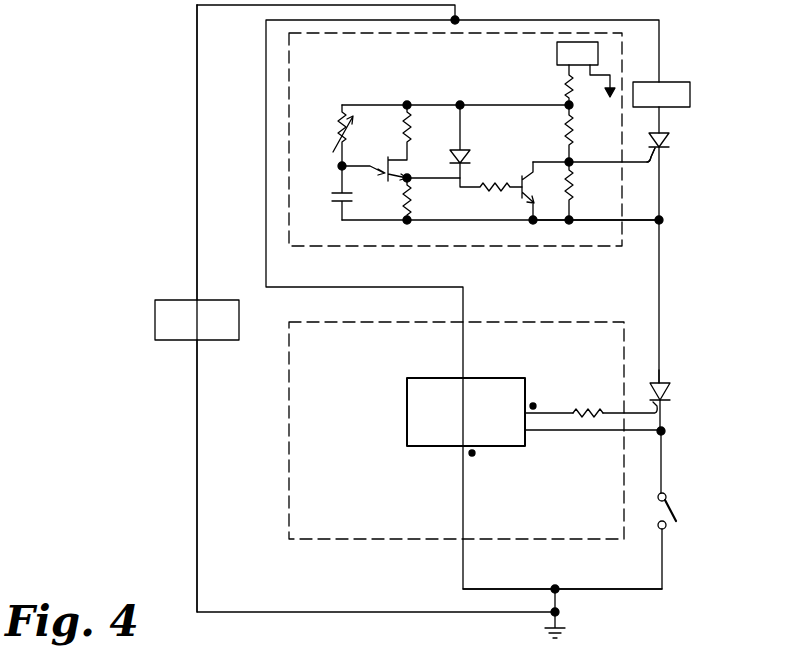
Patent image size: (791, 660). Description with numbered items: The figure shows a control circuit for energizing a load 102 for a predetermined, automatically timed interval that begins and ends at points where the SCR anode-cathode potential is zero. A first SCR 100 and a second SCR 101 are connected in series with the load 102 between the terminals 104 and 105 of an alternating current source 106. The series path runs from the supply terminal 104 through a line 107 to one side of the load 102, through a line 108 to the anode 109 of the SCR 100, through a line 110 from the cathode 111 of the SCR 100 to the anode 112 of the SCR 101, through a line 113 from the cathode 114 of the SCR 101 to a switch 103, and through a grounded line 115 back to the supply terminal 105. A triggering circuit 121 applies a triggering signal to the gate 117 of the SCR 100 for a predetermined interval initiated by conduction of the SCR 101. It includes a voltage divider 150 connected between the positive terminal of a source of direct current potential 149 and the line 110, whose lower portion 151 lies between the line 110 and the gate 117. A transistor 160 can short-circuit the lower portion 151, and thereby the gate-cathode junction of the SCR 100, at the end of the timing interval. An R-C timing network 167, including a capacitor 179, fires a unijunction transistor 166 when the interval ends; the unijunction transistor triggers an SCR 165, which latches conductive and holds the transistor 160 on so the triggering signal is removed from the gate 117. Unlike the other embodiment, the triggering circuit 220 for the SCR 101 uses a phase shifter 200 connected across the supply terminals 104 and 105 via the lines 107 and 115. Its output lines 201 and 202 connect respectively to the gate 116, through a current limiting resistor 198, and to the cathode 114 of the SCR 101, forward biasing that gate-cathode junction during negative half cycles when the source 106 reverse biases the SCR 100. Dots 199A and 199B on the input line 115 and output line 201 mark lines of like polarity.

The first SCR 100 is at (686, 154).
The second SCR 101 is at (698, 399).
The load 102 is at (691, 93).
The switch 103 is at (684, 510).
The supply terminal 104 is at (203, 297).
The supply terminal 105 is at (190, 346).
The alternating current source 106 is at (155, 329).
The line 107 is at (563, 17).
The line 108 is at (666, 112).
The anode 109 is at (653, 133).
The line 110 is at (665, 194).
The cathode 111 is at (668, 150).
The anode 112 is at (670, 392).
The line 113 is at (668, 453).
The cathode 114 is at (668, 403).
The grounded line 115 is at (577, 592).
The gate 116 is at (666, 430).
The gate 117 is at (658, 172).
The triggering circuit 121 is at (284, 120).
The source of direct current potential 149 is at (556, 55).
The voltage divider 150 is at (573, 240).
The lower divider portion 151 is at (583, 201).
The transistor 160 is at (513, 205).
The SCR 165 is at (475, 150).
The unijunction transistor 166 is at (386, 150).
The R-C timing network 167 is at (343, 95).
The capacitor 179 is at (330, 214).
The current limiting resistor 198 is at (592, 405).
The dot 199A is at (474, 455).
The dot 199B is at (535, 404).
The phase shifter 200 is at (413, 448).
The output line 201 is at (560, 416).
The output line 202 is at (548, 432).
The triggering circuit 220 is at (292, 545).